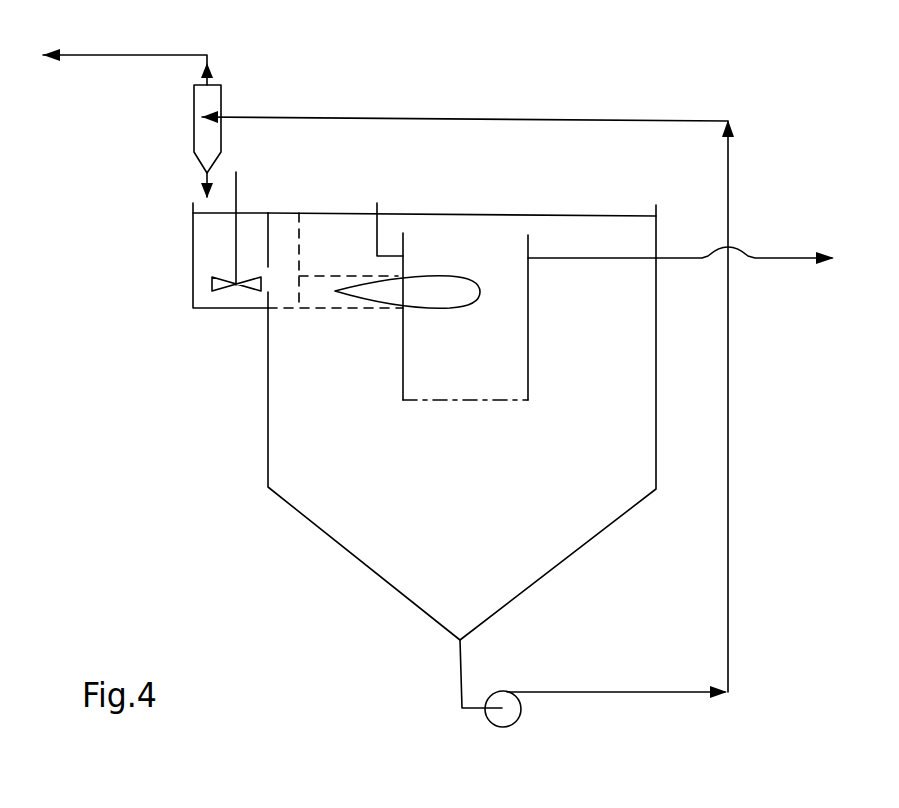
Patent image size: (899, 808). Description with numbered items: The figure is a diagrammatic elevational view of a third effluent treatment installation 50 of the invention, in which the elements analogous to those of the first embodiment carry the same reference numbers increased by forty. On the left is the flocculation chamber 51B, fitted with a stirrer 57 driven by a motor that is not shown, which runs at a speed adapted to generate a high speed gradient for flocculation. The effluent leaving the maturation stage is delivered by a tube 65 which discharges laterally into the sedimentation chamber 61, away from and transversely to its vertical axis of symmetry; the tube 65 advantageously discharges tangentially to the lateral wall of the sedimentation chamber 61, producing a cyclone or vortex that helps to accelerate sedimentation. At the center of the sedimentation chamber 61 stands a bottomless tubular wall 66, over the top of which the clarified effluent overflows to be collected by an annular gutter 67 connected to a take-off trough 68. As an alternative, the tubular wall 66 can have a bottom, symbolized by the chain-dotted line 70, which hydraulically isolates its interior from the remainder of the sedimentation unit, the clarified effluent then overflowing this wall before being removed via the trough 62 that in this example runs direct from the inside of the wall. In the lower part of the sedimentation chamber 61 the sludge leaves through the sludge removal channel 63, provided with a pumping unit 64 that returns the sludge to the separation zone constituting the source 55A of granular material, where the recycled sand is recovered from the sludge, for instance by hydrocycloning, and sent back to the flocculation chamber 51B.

The installation 50 is at (738, 78).
The source of granular material 55A is at (215, 85).
The flocculation chamber 51B is at (192, 253).
The stirrer 57 is at (237, 182).
The tube 65 is at (335, 275).
The annular gutter 67 is at (390, 257).
The bottomless tubular wall 66 is at (528, 338).
The chain-dotted line 70 is at (515, 400).
The sedimentation chamber 61 is at (365, 507).
The take-off trough 68 is at (603, 258).
The trough 62 is at (784, 258).
The sludge removal channel 63 is at (463, 655).
The pumping unit 64 is at (522, 710).